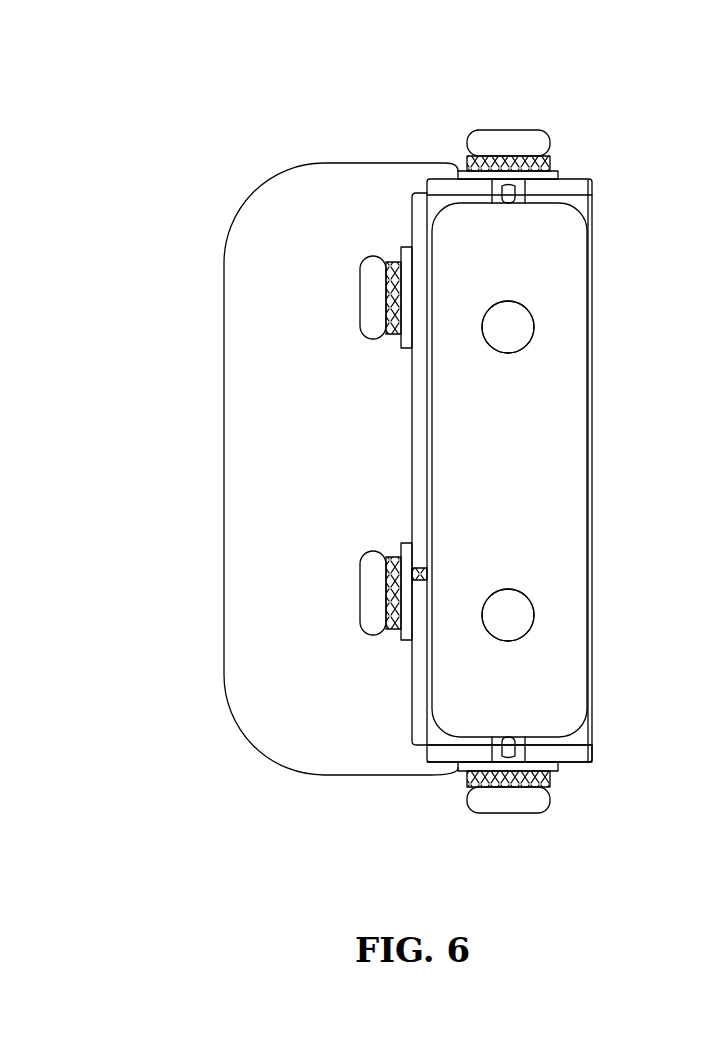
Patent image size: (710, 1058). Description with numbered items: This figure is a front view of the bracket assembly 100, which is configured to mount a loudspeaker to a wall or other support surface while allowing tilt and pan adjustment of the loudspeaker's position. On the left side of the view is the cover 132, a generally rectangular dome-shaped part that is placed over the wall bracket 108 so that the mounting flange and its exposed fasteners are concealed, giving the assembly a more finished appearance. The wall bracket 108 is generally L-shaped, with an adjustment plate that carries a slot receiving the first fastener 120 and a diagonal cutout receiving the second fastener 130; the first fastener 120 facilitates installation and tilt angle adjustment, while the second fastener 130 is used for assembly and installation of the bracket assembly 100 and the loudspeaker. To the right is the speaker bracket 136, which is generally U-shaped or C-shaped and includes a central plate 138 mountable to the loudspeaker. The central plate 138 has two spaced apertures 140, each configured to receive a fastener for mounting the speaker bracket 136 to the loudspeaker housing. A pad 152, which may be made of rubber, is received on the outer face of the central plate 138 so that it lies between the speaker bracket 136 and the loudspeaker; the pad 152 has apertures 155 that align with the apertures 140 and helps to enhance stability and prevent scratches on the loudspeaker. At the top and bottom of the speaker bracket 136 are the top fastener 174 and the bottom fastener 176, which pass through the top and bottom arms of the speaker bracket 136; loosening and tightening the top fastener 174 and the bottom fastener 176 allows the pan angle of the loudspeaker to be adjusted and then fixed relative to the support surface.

The bracket assembly 100 is at (250, 108).
The wall bracket 108 is at (413, 191).
The first fastener 120 is at (360, 297).
The second fastener 130 is at (360, 592).
The cover 132 is at (298, 764).
The speaker bracket 136 is at (592, 201).
The central plate 138 is at (570, 753).
The aperture 140 is at (510, 327).
The aperture 155 is at (508, 471).
The pad 152 is at (555, 459).
The top fastener 174 is at (507, 130).
The bottom fastener 176 is at (510, 813).